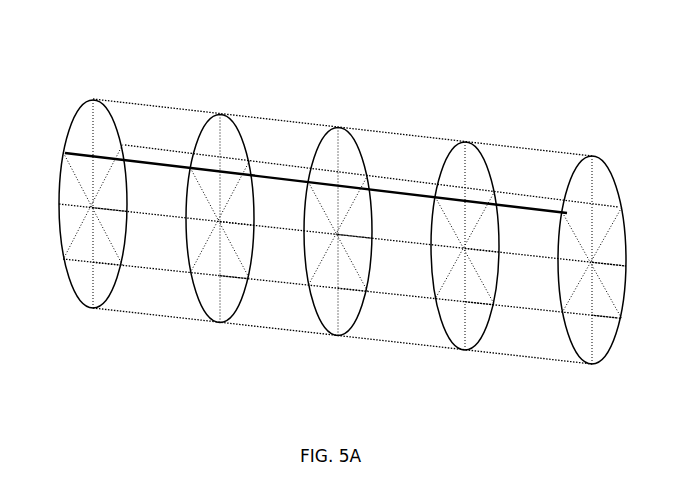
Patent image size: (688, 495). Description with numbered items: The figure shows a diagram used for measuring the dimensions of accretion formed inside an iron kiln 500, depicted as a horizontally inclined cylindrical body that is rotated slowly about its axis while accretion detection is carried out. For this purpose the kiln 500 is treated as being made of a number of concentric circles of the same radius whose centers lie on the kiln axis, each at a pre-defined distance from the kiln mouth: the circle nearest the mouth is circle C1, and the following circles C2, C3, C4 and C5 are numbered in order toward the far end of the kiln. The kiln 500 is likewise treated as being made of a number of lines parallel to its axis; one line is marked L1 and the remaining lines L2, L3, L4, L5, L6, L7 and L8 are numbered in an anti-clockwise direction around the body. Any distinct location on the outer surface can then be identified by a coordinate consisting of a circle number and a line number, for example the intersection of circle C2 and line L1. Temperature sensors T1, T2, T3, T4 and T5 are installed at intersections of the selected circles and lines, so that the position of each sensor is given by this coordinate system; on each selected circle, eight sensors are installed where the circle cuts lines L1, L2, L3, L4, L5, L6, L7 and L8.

The iron kiln 500 is at (404, 44).
The line no. 1 L1 is at (332, 109).
The line no. 2 L2 is at (301, 174).
The line no. 3 L3 is at (329, 227).
The line no. 4 L4 is at (327, 287).
The line no. 5 L5 is at (336, 336).
The line no. 6 L6 is at (357, 274).
The line no. 7 L7 is at (359, 222).
The line no. 8 L8 is at (371, 159).
The circle no. 1 C1 is at (93, 238).
The circle no. 2 C2 is at (220, 239).
The circle no. 3 C3 is at (338, 254).
The circle no. 4 C4 is at (465, 265).
The circle no. 5 C5 is at (592, 281).
The temperature sensor T1 is at (98, 178).
The temperature sensor T2 is at (219, 193).
The temperature sensor T3 is at (337, 208).
The temperature sensor T4 is at (464, 220).
The temperature sensor T5 is at (591, 239).